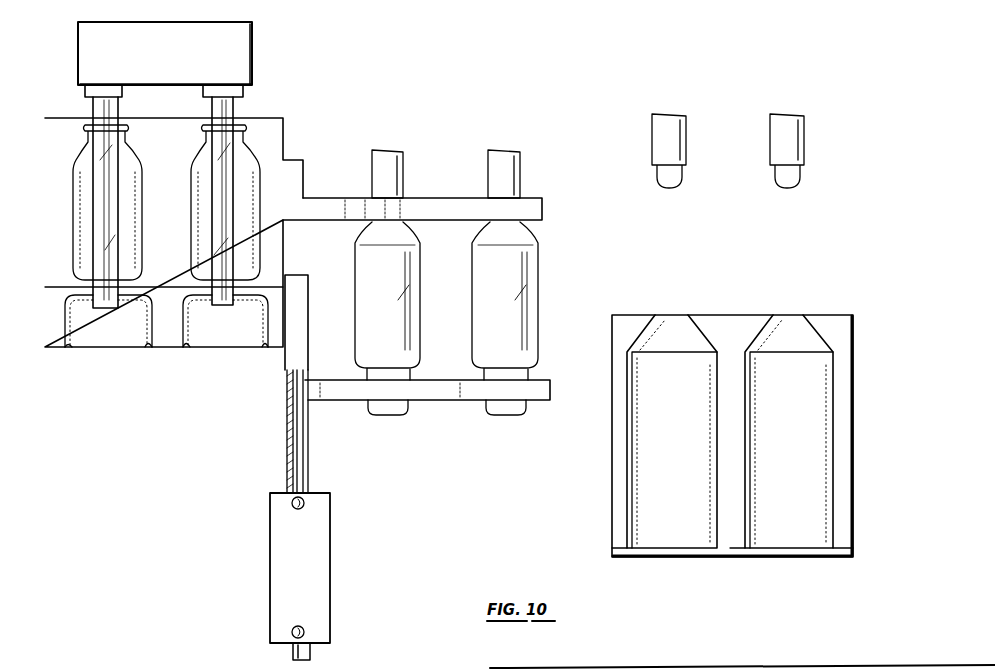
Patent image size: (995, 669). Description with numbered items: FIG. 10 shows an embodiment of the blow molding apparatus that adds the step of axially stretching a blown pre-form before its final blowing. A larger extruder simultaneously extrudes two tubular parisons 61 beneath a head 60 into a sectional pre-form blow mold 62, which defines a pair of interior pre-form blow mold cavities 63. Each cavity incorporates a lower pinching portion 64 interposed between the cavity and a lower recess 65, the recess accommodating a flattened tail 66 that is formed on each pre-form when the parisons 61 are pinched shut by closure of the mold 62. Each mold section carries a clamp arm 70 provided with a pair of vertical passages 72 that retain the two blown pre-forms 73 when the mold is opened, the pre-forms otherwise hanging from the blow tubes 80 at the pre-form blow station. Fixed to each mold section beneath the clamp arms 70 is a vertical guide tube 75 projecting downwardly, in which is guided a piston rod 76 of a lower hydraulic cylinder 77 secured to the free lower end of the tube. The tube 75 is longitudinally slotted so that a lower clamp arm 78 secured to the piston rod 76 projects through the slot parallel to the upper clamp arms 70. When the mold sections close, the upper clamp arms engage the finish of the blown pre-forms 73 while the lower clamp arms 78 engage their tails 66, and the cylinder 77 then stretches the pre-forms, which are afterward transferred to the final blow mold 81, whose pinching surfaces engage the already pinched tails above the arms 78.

The press head 60 is at (264, 43).
The tubular parison 61 is at (93, 108).
The pre-form blow mold 62 is at (300, 129).
The pre-form blow mold cavity 63 is at (191, 216).
The lower pinching portion 64 is at (130, 300).
The lower recess 65 is at (68, 350).
The flattened tail 66 is at (392, 412).
The clamp arm 70 is at (336, 215).
The vertical passage 72 is at (398, 208).
The blown pre-form 73 is at (412, 283).
The vertical guide tube 75 is at (287, 465).
The piston rod 76 is at (303, 465).
The lower hydraulic cylinder 77 is at (322, 567).
The lower clamp arm 78 is at (334, 392).
The blow tube 80 is at (392, 165).
The final blow mold 81 is at (846, 470).